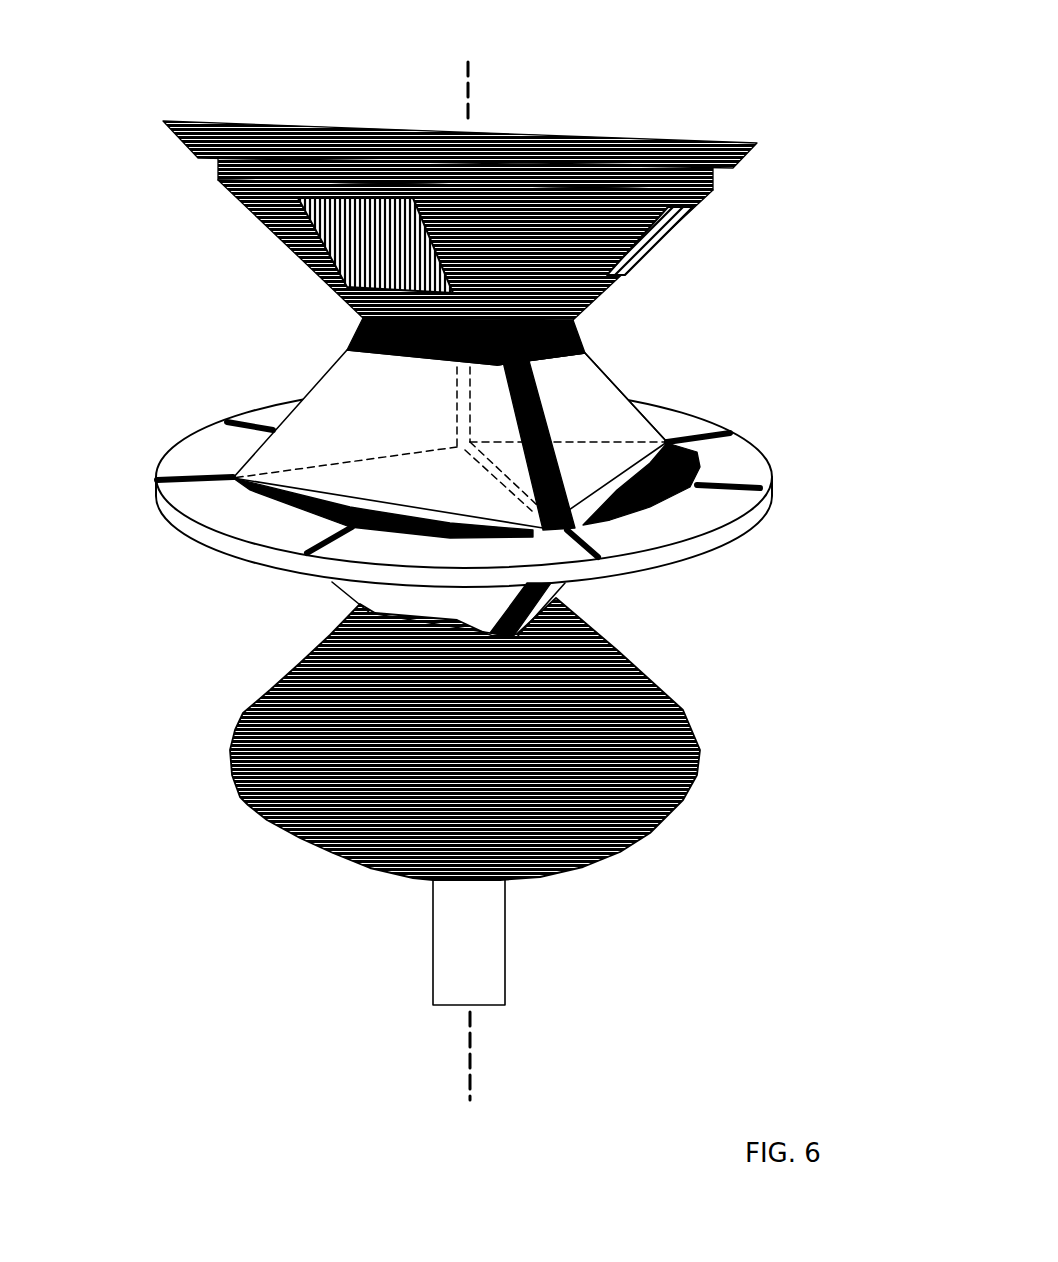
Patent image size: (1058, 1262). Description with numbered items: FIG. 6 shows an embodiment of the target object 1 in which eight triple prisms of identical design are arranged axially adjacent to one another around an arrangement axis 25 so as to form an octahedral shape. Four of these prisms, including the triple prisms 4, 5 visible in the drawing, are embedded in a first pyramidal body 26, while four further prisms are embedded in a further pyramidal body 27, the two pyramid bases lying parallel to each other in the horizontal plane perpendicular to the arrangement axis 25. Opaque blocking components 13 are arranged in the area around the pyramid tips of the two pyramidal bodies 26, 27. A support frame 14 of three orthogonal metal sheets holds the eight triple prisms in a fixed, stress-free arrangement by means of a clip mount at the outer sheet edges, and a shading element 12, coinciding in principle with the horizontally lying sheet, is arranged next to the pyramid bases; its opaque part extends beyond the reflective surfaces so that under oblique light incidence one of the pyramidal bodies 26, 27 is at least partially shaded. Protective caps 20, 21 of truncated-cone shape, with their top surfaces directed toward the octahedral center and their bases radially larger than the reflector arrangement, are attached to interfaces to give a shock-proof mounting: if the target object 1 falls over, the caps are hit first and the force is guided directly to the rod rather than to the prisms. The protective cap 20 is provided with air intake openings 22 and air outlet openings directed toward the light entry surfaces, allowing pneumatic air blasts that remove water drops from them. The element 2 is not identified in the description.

The target object 1 is at (854, 111).
The shaft 2 is at (458, 951).
The triple prism 4 is at (312, 425).
The triple prism 5 is at (585, 421).
The shading element 12 is at (464, 486).
The blocking component 13 is at (577, 330).
The support frame 14 is at (577, 607).
The protective cap 20 is at (245, 203).
The protective cap 21 is at (268, 725).
The air intake openings 22 is at (343, 243).
The arrangement axis 25 is at (471, 560).
The first pyramidal body 26 is at (746, 301).
The further pyramidal body 27 is at (281, 610).